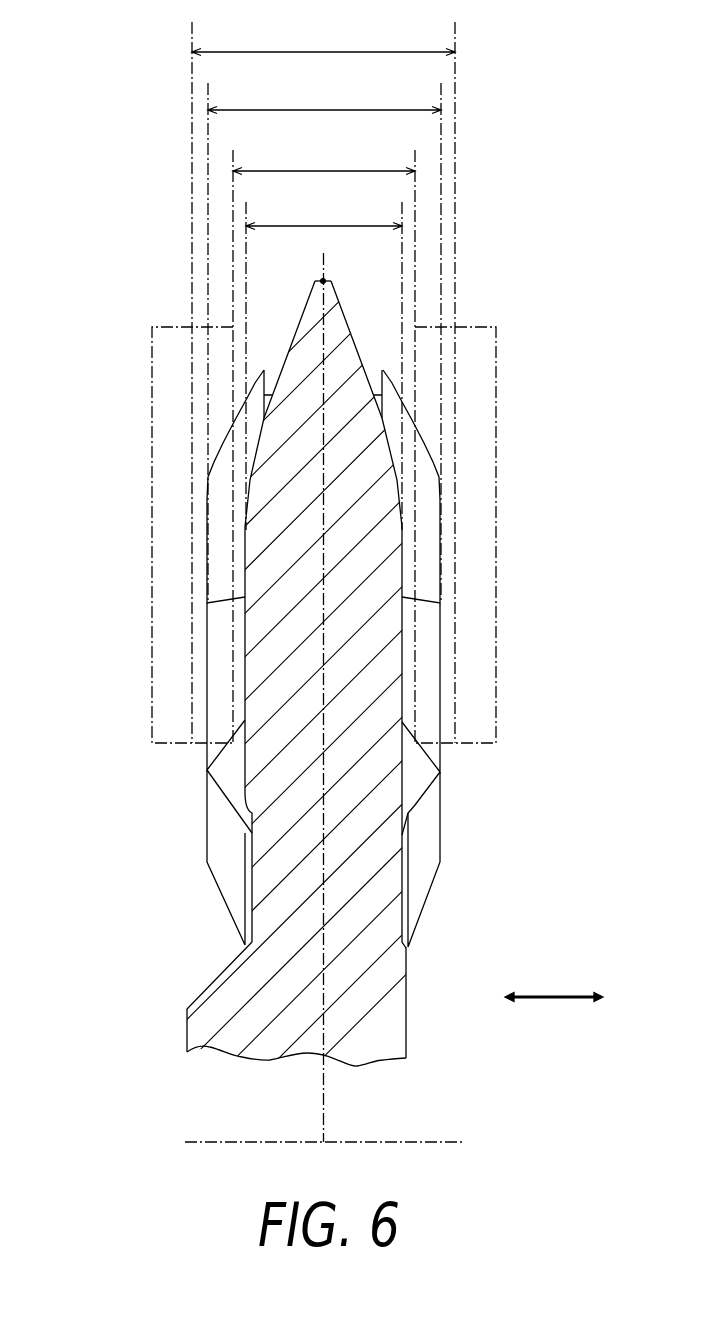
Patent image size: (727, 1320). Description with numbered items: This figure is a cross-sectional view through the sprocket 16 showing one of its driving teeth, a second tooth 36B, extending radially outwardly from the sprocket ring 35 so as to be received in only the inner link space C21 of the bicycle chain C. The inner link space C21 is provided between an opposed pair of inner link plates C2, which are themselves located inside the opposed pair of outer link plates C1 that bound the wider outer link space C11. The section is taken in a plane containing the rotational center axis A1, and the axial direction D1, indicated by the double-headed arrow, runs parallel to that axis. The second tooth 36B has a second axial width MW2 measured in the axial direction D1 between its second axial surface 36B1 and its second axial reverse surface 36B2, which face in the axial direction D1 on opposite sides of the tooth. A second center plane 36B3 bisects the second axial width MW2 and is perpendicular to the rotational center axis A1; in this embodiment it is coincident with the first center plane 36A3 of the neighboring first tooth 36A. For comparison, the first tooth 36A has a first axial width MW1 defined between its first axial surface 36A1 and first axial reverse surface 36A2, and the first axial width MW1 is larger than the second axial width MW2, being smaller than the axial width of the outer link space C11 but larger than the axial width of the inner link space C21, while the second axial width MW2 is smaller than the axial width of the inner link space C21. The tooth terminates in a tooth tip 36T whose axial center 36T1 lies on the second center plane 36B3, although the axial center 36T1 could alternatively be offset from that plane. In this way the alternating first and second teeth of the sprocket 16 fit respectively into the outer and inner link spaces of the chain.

The outer link space C11 is at (323, 382).
The first axial width MW1 is at (324, 341).
The inner link space C21 is at (324, 444).
The second axial width MW2 is at (324, 364).
The tooth tip 36T is at (324, 281).
The axial center 36T1 is at (322, 281).
The bicycle chain C is at (498, 314).
The outer link plates C1 is at (150, 362).
The inner link plates C2 is at (193, 412).
The first tooth 36A is at (330, 486).
The first axial surface 36A1 is at (207, 528).
The first axial reverse surface 36A2 is at (441, 539).
The first center plane 36A3 is at (493, 799).
The second tooth 36B is at (331, 696).
The second axial surface 36B1 is at (207, 636).
The second axial reverse surface 36B2 is at (402, 624).
The second center plane 36B3 is at (323, 814).
The sprocket 16 is at (191, 816).
The sprocket ring 35 is at (225, 1012).
The axial direction D1 is at (552, 993).
The rotational center axis A1 is at (450, 1141).